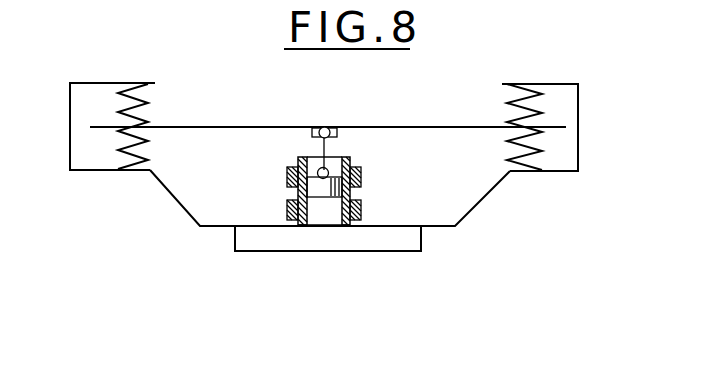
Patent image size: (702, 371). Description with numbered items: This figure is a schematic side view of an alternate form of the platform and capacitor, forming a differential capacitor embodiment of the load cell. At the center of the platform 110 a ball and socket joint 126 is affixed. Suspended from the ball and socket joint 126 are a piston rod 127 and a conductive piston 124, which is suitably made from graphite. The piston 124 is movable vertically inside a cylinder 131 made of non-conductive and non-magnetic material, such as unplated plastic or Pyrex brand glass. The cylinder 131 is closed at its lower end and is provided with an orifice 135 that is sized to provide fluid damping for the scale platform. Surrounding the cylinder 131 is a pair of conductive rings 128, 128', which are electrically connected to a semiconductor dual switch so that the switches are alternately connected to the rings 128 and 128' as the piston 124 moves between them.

The platform 110 is at (413, 124).
The conductive piston 124 is at (314, 176).
The ball and socket joint 126 is at (322, 127).
The piston rod 127 is at (330, 153).
The conductive ring 128 is at (285, 174).
The conductive ring 128' is at (282, 207).
The cylinder 131 is at (297, 225).
The orifice 135 is at (350, 222).